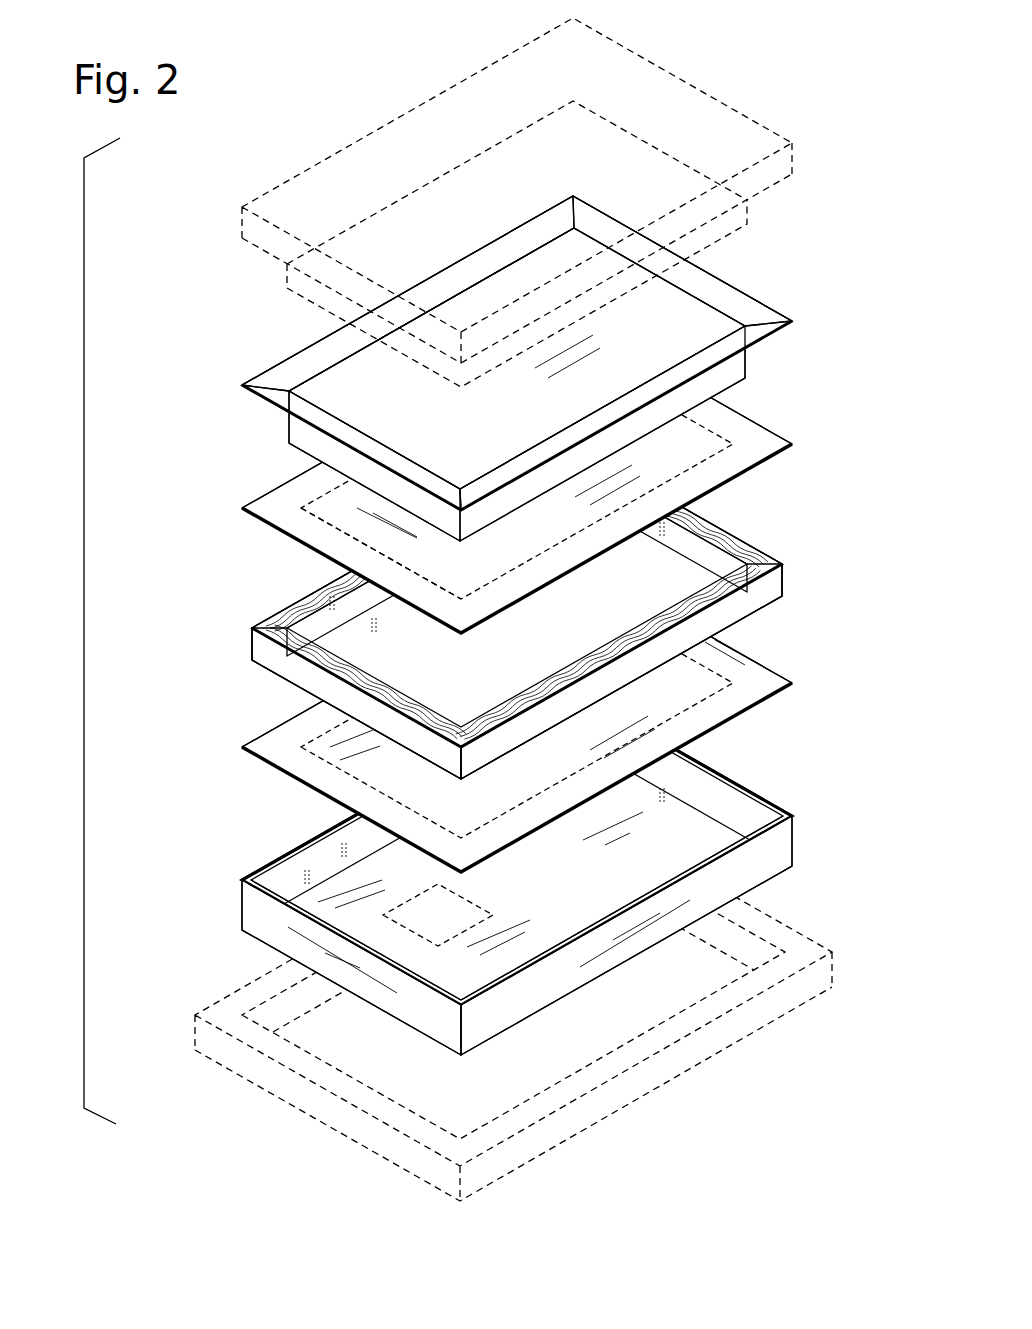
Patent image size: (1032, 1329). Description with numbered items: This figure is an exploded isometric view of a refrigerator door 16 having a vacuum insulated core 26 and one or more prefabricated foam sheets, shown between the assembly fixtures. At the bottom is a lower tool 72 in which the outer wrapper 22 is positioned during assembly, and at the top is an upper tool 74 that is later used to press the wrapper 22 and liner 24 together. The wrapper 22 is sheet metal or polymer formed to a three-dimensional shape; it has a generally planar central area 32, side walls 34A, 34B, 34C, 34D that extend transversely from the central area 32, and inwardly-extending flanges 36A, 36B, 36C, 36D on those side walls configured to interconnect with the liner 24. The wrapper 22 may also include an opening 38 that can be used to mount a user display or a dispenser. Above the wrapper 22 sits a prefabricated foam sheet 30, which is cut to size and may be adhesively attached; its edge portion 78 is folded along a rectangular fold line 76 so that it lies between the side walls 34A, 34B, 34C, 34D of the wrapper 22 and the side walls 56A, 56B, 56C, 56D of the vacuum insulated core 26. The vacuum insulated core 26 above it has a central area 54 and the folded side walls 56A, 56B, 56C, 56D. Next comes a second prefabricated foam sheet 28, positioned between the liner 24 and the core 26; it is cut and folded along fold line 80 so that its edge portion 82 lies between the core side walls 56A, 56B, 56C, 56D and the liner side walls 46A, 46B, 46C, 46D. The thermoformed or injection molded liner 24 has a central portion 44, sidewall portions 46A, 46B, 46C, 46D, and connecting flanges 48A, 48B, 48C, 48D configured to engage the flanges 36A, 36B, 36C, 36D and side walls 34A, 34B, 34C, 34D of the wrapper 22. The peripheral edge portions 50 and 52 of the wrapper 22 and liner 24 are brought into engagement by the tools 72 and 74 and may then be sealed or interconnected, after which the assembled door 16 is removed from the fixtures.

The door 16 is at (180, 866).
The outer wrapper 22 is at (505, 891).
The liner 24 is at (510, 368).
The vacuum insulated core 26 is at (489, 612).
The prefabricated foam sheet 28 is at (479, 476).
The prefabricated foam sheet 30 is at (510, 715).
The central area 32 is at (541, 881).
The side wall 34A is at (375, 992).
The side wall 34B is at (548, 987).
The side wall 34C is at (763, 818).
The side wall 34D is at (318, 845).
The inwardly-extending flange 36A is at (272, 930).
The inwardly-extending flange 36B is at (745, 848).
The inwardly-extending flange 36C is at (734, 781).
The inwardly-extending flange 36D is at (260, 896).
The opening 38 is at (425, 945).
The central portion 44 is at (468, 420).
The sidewall portion 46A is at (262, 490).
The sidewall portion 46B is at (735, 372).
The sidewall portion 46C is at (707, 320).
The sidewall portion 46D is at (315, 382).
The connecting flange 48A is at (320, 452).
The connecting flange 48B is at (778, 330).
The connecting flange 48C is at (700, 287).
The connecting flange 48D is at (315, 345).
The peripheral edge portion 50 is at (243, 884).
The peripheral edge portion 52 is at (286, 393).
The central area 54 is at (448, 569).
The side wall 56A is at (292, 670).
The side wall 56B is at (750, 603).
The side wall 56C is at (700, 552).
The side wall 56D is at (320, 593).
The lower tool 72 is at (725, 1082).
The upper tool 74 is at (670, 70).
The fold line 76 is at (697, 700).
The edge portion 78 is at (755, 673).
The fold line 80 is at (265, 530).
The edge portion 82 is at (338, 556).